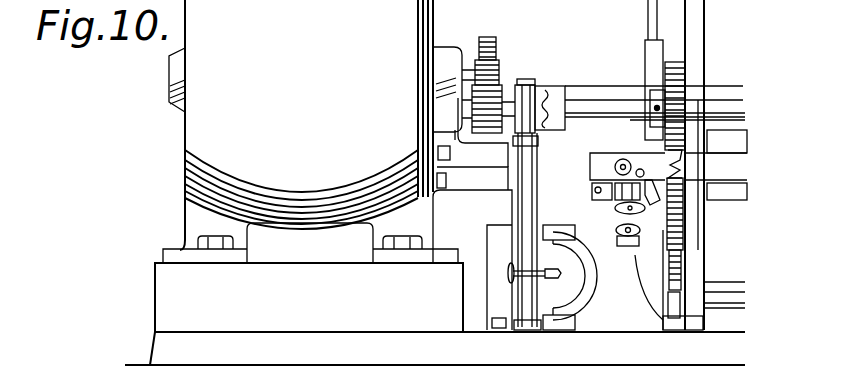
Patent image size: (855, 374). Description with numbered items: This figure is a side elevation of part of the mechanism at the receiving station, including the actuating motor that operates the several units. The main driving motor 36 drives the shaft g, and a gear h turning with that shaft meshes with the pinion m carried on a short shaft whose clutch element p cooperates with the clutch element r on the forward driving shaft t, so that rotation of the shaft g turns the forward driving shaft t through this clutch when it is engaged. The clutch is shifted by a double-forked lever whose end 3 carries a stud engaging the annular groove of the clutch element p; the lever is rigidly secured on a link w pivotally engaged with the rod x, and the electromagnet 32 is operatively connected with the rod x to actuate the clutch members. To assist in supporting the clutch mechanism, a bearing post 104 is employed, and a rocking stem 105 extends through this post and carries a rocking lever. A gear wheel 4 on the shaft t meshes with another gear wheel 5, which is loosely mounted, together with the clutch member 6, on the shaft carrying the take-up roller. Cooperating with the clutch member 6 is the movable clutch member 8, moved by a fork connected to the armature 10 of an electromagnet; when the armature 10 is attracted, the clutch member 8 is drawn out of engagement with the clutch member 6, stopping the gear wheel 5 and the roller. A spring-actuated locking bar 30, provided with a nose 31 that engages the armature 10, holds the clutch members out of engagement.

The main driving motor 36 is at (315, 125).
The shaft g is at (475, 72).
The gear h is at (497, 54).
The pinion m is at (484, 136).
The end of forked lever 3 is at (535, 90).
The clutch element p is at (550, 92).
The clutch element r is at (572, 94).
The gear wheel 4 is at (686, 70).
The bearing post 104 is at (539, 190).
The rocking stem 105 is at (540, 145).
The link w is at (525, 272).
The rod x is at (560, 274).
The electromagnet 32 is at (578, 302).
The gear wheel 5 is at (687, 152).
The spring-actuated locking bar 30 is at (606, 167).
The nose 31 is at (688, 172).
The forward driving shaft t is at (608, 134).
The clutch member 6 is at (660, 180).
The clutch member 8 is at (615, 202).
The armature 10 is at (668, 270).